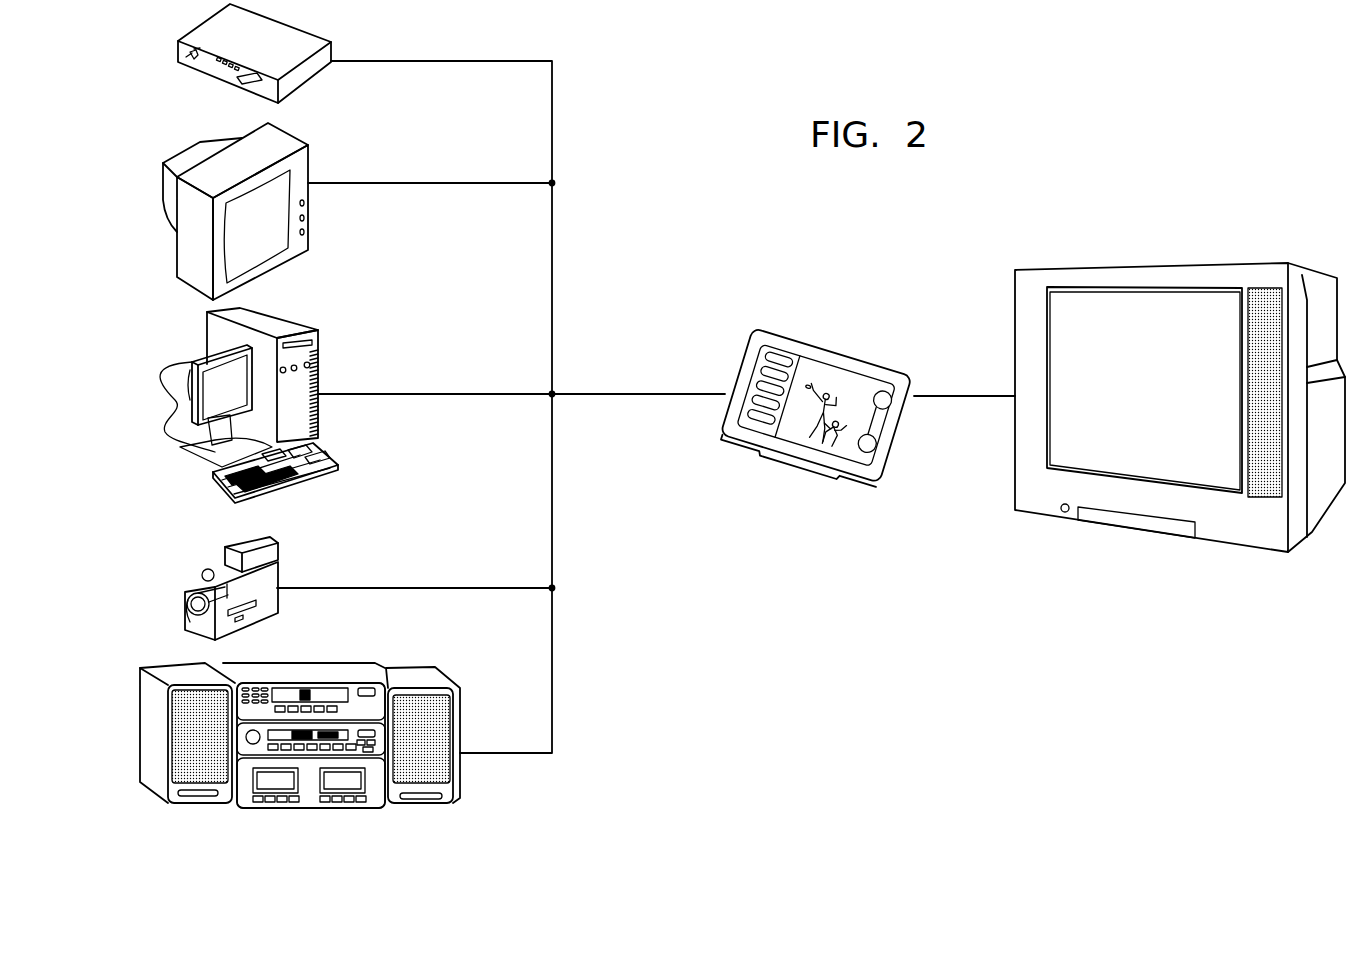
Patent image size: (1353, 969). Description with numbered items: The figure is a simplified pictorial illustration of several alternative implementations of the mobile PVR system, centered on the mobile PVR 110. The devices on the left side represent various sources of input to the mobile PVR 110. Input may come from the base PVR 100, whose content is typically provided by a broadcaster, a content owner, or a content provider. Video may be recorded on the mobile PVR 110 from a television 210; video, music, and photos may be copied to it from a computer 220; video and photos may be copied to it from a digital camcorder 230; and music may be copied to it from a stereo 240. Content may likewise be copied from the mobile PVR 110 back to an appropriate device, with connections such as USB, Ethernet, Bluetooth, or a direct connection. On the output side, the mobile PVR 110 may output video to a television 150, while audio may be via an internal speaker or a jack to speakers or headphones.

The base PVR 100 is at (319, 79).
The mobile PVR 110 is at (815, 348).
The television 150 is at (1118, 275).
The television 210 is at (297, 248).
The computer 220 is at (318, 420).
The digital camcorder 230 is at (277, 552).
The stereo 240 is at (348, 675).